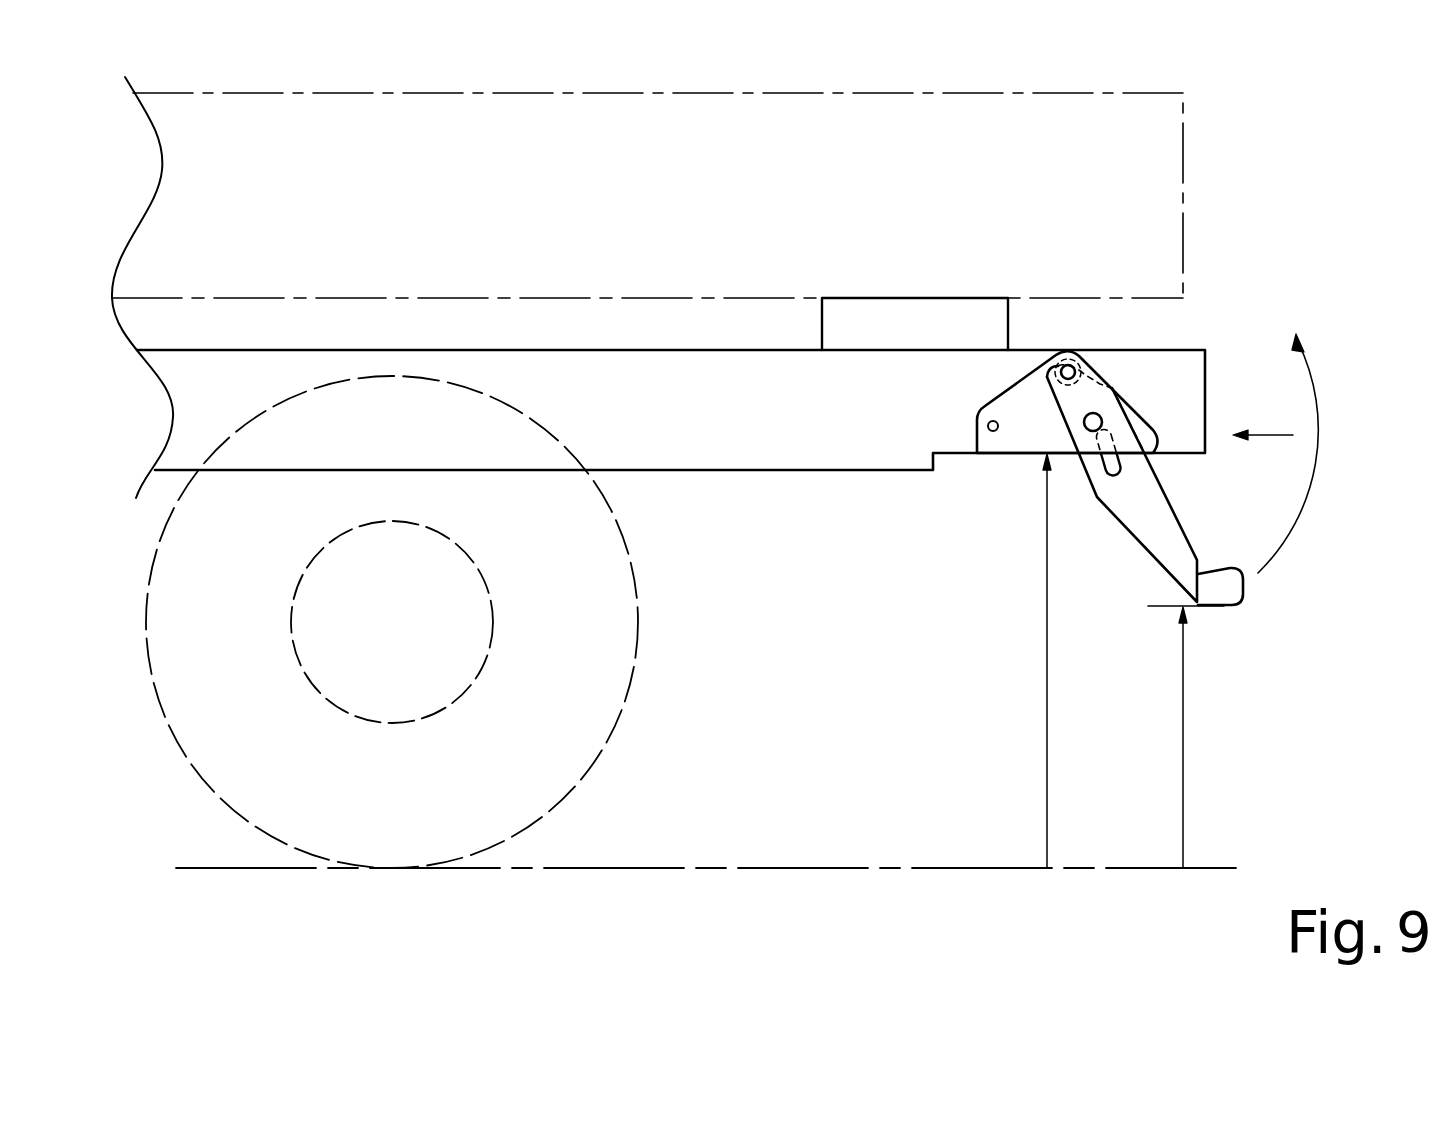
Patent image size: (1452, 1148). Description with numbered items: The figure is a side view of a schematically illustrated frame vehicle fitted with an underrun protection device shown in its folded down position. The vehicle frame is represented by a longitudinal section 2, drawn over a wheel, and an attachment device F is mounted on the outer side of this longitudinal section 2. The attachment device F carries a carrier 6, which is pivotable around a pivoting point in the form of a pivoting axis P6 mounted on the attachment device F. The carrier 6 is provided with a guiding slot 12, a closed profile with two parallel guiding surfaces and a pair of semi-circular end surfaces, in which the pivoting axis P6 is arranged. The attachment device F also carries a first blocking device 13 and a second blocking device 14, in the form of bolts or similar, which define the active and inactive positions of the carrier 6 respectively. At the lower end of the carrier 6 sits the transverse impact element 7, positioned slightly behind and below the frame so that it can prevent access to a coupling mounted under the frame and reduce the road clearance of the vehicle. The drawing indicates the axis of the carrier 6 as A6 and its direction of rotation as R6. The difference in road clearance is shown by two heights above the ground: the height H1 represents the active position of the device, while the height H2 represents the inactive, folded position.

The longitudinal section 2 is at (832, 421).
The carrier 6 is at (1157, 513).
The transverse impact element 7 is at (1236, 592).
The guiding slot 12 is at (1095, 497).
The first blocking device 13 is at (1071, 366).
The second blocking device 14 is at (990, 432).
The attachment device F is at (1030, 455).
The pivoting axis P6 is at (1097, 418).
The pivot axis direction A6 is at (1272, 435).
The rotation direction of arm R6 is at (1313, 458).
The height H1 is at (1189, 737).
The height H2 is at (1068, 661).